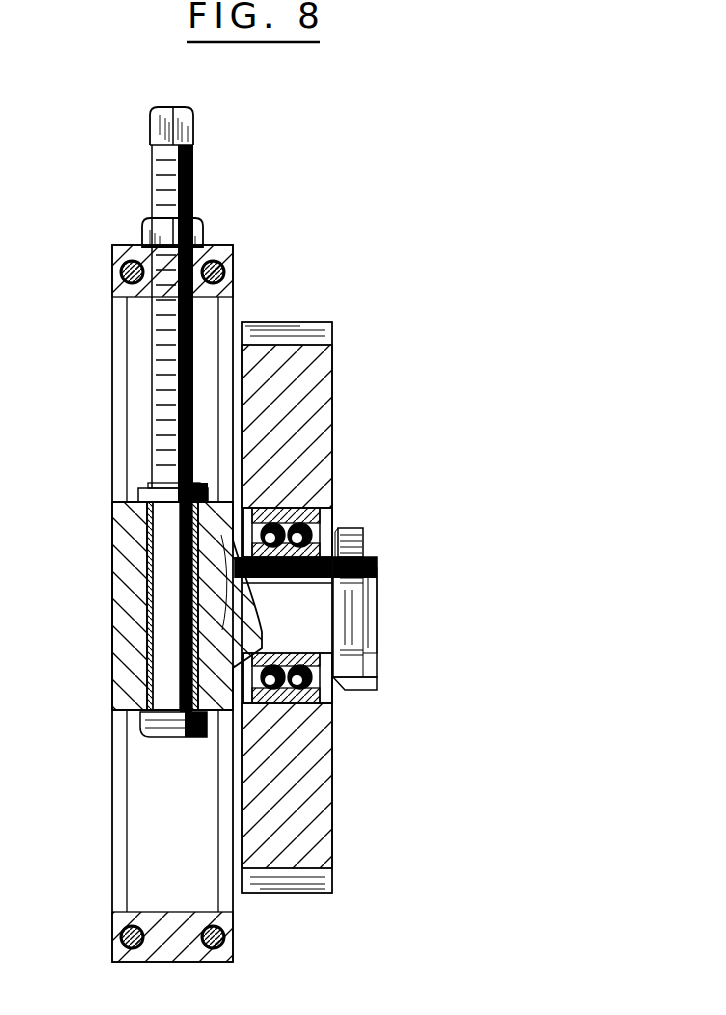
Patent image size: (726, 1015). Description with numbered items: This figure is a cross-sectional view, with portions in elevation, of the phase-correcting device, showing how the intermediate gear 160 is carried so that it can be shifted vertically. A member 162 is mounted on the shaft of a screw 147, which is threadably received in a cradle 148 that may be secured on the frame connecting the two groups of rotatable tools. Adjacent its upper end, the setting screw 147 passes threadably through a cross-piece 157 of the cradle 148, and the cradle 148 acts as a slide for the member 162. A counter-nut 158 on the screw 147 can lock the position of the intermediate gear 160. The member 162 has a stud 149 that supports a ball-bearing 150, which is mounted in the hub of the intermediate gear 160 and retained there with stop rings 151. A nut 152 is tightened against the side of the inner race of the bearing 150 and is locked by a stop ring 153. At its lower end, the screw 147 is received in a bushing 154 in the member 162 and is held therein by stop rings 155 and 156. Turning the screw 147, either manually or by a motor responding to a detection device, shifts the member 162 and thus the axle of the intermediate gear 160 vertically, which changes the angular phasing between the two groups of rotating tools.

The screw 147 is at (192, 172).
The cradle 148 is at (226, 310).
The stud 149 is at (368, 690).
The ball-bearing 150 is at (318, 507).
The stop rings 151 is at (255, 503).
The nut 152 is at (378, 648).
The stop ring 153 is at (352, 558).
The bushing 154 is at (147, 650).
The stop ring 155 is at (135, 714).
The stop ring 156 is at (140, 492).
The cross-piece 157 is at (120, 290).
The counter-nut 158 is at (207, 232).
The intermediate gear 160 is at (318, 372).
The member 162 is at (128, 568).